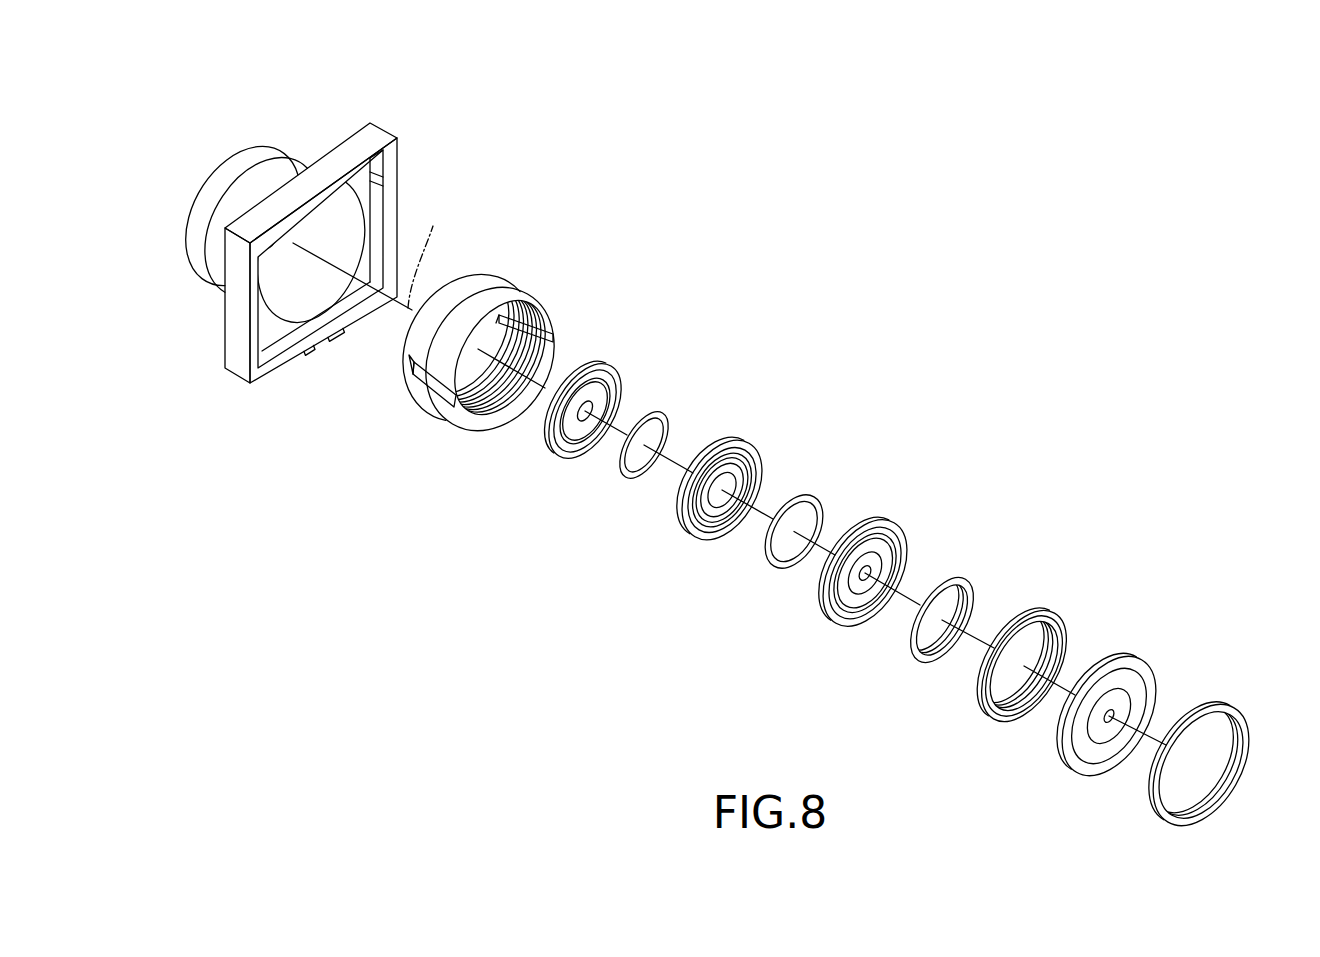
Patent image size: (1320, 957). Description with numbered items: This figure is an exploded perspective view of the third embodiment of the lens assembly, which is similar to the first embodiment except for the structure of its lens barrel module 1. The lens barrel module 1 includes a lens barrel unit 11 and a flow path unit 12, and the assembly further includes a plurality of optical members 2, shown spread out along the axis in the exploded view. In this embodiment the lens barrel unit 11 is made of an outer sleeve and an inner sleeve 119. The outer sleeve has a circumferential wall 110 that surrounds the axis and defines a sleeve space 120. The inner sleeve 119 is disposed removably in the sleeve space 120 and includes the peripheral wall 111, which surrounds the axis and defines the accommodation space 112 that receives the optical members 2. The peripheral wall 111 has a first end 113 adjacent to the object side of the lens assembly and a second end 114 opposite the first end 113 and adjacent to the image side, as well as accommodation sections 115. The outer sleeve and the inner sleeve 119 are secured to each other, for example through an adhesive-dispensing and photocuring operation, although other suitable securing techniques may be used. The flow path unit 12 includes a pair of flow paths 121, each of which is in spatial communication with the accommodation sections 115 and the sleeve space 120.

The lens barrel module 1 is at (316, 136).
The lens barrel unit 11 is at (380, 131).
The circumferential wall 110 is at (290, 302).
The sleeve space 120 is at (288, 360).
The first end 113 is at (455, 280).
The inner sleeve 119 is at (472, 283).
The accommodation space 112 is at (480, 425).
The peripheral wall 111 is at (540, 350).
The accommodation sections 115 is at (462, 395).
The second end 114 is at (548, 307).
The flow paths 121 is at (553, 333).
The flow path unit 12 is at (414, 366).
The optical members 2 is at (749, 430).